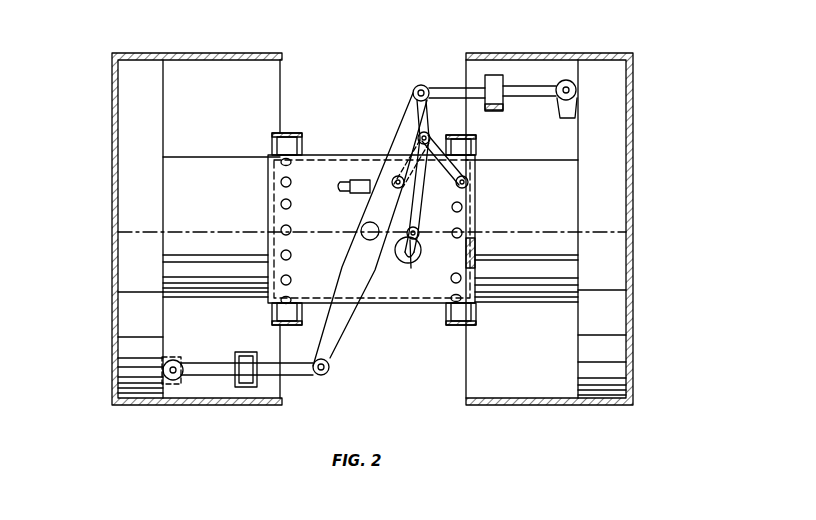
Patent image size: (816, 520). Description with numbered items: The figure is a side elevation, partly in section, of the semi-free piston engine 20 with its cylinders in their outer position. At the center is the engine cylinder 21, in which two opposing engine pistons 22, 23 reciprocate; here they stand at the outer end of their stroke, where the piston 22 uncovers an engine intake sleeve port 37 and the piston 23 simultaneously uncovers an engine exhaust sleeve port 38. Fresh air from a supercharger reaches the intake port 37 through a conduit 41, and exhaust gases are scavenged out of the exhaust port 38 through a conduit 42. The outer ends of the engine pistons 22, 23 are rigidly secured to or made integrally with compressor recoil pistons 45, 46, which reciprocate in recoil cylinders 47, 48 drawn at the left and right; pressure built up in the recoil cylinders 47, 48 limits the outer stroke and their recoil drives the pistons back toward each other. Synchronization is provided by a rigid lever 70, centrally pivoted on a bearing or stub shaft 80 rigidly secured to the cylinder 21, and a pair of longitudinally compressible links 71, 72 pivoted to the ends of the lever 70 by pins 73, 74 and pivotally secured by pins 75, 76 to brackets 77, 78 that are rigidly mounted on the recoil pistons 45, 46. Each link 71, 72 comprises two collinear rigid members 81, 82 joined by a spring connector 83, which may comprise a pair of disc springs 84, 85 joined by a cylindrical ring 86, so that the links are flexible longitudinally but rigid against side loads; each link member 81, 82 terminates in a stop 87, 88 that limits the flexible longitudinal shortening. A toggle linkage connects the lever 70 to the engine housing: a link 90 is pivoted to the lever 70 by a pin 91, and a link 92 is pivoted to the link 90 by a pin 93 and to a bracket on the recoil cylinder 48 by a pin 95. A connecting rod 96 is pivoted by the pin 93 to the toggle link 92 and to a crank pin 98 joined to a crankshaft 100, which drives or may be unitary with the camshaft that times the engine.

The semi-free piston engine 20 is at (546, 50).
The engine cylinder 21 is at (316, 158).
The engine piston 22 is at (209, 213).
The engine piston 23 is at (524, 213).
The engine intake sleeve port 37 is at (281, 204).
The engine exhaust sleeve port 38 is at (461, 298).
The conduit 41 is at (272, 140).
The conduit 42 is at (470, 314).
The compressor recoil piston 45 is at (152, 105).
The compressor recoil piston 46 is at (578, 343).
The recoil cylinder 47 is at (246, 55).
The recoil cylinder 48 is at (506, 56).
The rigid lever 70 is at (406, 113).
The longitudinally compressible link 71 is at (282, 374).
The longitudinally compressible link 72 is at (504, 92).
The pin 73 is at (328, 372).
The pin 74 is at (414, 91).
The pin 75 is at (179, 362).
The pin 76 is at (577, 90).
The bracket 77 is at (162, 360).
The bracket 78 is at (576, 110).
The stub shaft 80 is at (362, 232).
The link member 81 is at (448, 92).
The link member 82 is at (505, 84).
The spring connector 83 is at (496, 111).
The disc spring 84 is at (257, 386).
The disc spring 85 is at (237, 386).
The cylindrical ring 86 is at (240, 352).
The stop 87 is at (245, 388).
The stop 88 is at (250, 352).
The link 90 is at (410, 172).
The pin 91 is at (393, 187).
The link 92 is at (462, 160).
The pin 93 is at (428, 137).
The pin 95 is at (468, 182).
The connecting rod 96 is at (424, 203).
The crank pin 98 is at (419, 233).
The crankshaft 100 is at (412, 300).